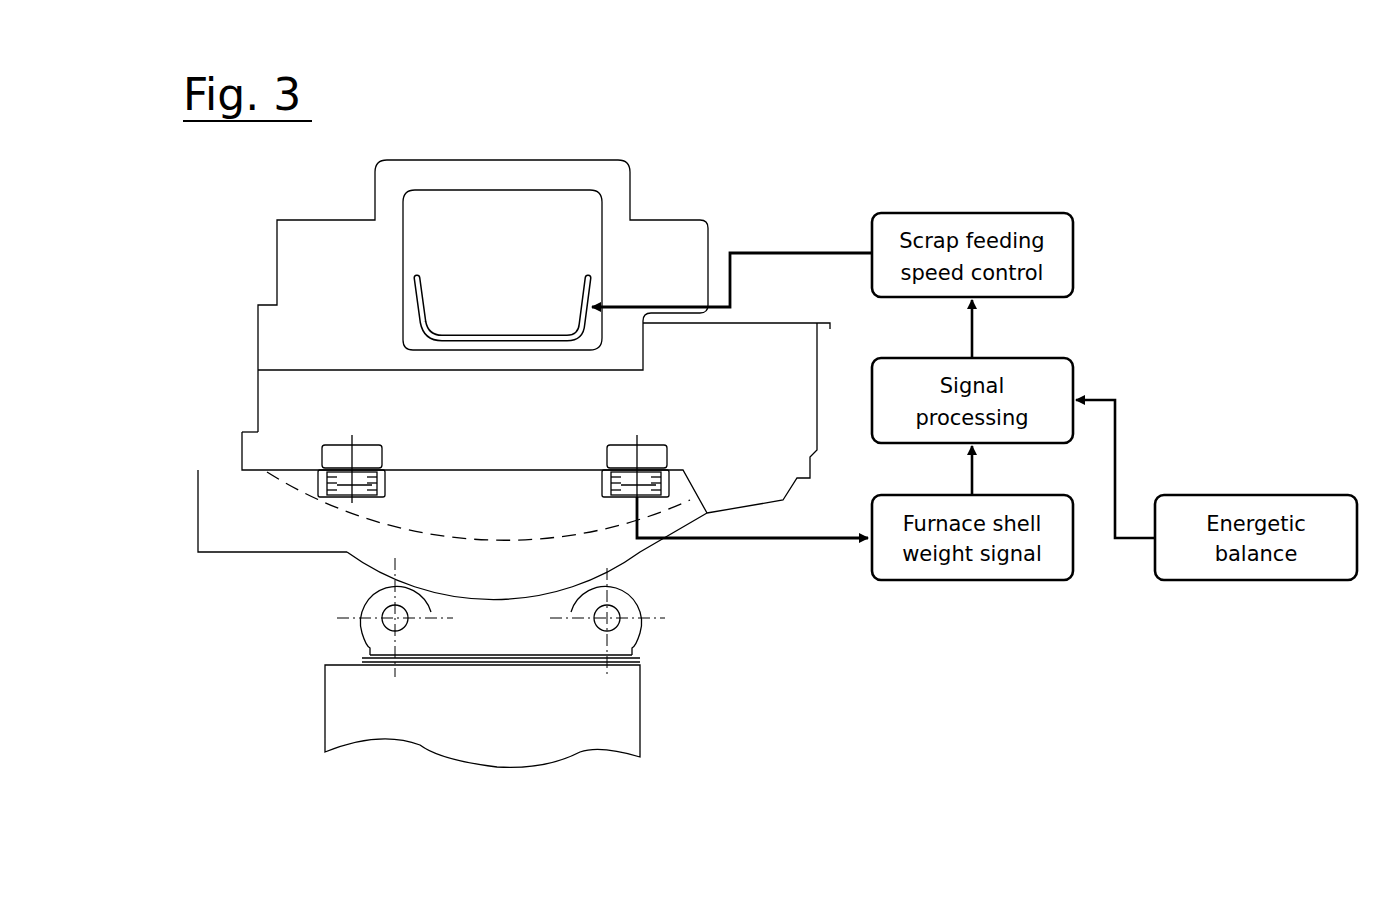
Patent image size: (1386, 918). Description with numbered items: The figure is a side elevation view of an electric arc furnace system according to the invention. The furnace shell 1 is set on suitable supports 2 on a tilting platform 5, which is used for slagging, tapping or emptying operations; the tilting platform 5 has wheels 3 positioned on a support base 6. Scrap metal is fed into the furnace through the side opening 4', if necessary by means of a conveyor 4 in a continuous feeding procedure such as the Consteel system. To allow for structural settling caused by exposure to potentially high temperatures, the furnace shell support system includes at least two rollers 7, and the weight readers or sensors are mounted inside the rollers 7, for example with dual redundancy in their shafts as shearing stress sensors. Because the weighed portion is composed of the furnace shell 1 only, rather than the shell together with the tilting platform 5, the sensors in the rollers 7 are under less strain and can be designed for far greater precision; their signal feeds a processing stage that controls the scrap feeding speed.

The furnace shell 1 is at (298, 305).
The supports 2 is at (632, 455).
The wheels 3 is at (430, 557).
The conveyor 4 is at (602, 260).
The side opening 4' is at (502, 218).
The tilting platform 5 is at (623, 552).
The support base 6 is at (565, 635).
The rollers 7 is at (603, 490).